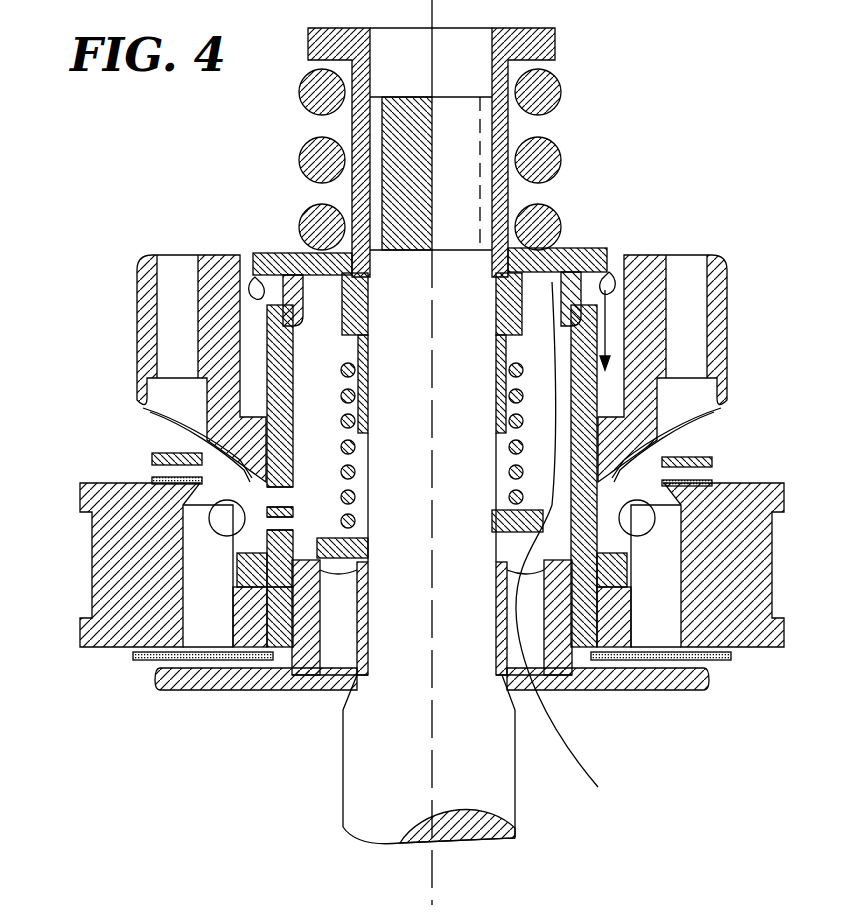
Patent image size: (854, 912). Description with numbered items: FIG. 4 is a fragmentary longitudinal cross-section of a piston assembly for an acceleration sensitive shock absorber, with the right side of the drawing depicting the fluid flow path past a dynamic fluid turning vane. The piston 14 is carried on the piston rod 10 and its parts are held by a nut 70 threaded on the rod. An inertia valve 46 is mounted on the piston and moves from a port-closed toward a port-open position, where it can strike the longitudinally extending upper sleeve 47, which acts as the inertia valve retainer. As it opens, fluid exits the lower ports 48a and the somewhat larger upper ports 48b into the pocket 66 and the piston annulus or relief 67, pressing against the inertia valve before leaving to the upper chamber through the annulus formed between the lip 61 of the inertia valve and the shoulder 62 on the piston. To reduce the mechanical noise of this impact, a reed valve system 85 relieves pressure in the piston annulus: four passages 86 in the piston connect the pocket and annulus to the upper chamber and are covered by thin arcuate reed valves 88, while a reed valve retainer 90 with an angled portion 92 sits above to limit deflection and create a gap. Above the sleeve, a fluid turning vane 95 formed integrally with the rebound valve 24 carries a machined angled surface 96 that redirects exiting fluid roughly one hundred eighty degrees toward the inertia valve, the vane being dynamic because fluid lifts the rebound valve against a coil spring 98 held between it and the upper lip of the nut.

The piston rod 10 is at (503, 777).
The piston 14 is at (740, 563).
The rebound valve 24 is at (573, 248).
The inertia valve 46 is at (715, 290).
The upper sleeve 47 is at (268, 253).
The lower ports 48a is at (280, 522).
The upper ports 48b is at (280, 493).
The lip 61 is at (235, 550).
The shoulder 62 is at (232, 508).
The pocket 66 is at (247, 518).
The relief 67 is at (248, 540).
The nut 70 is at (556, 45).
The reed valve system 85 is at (108, 456).
The passages 86 is at (182, 490).
The reed valves 88 is at (693, 473).
The reed valve retainer 90 is at (247, 478).
The angled portion 92 is at (243, 463).
The fluid turning vane 95 is at (603, 247).
The angled surface 96 is at (254, 286).
The coil spring 98 is at (548, 90).